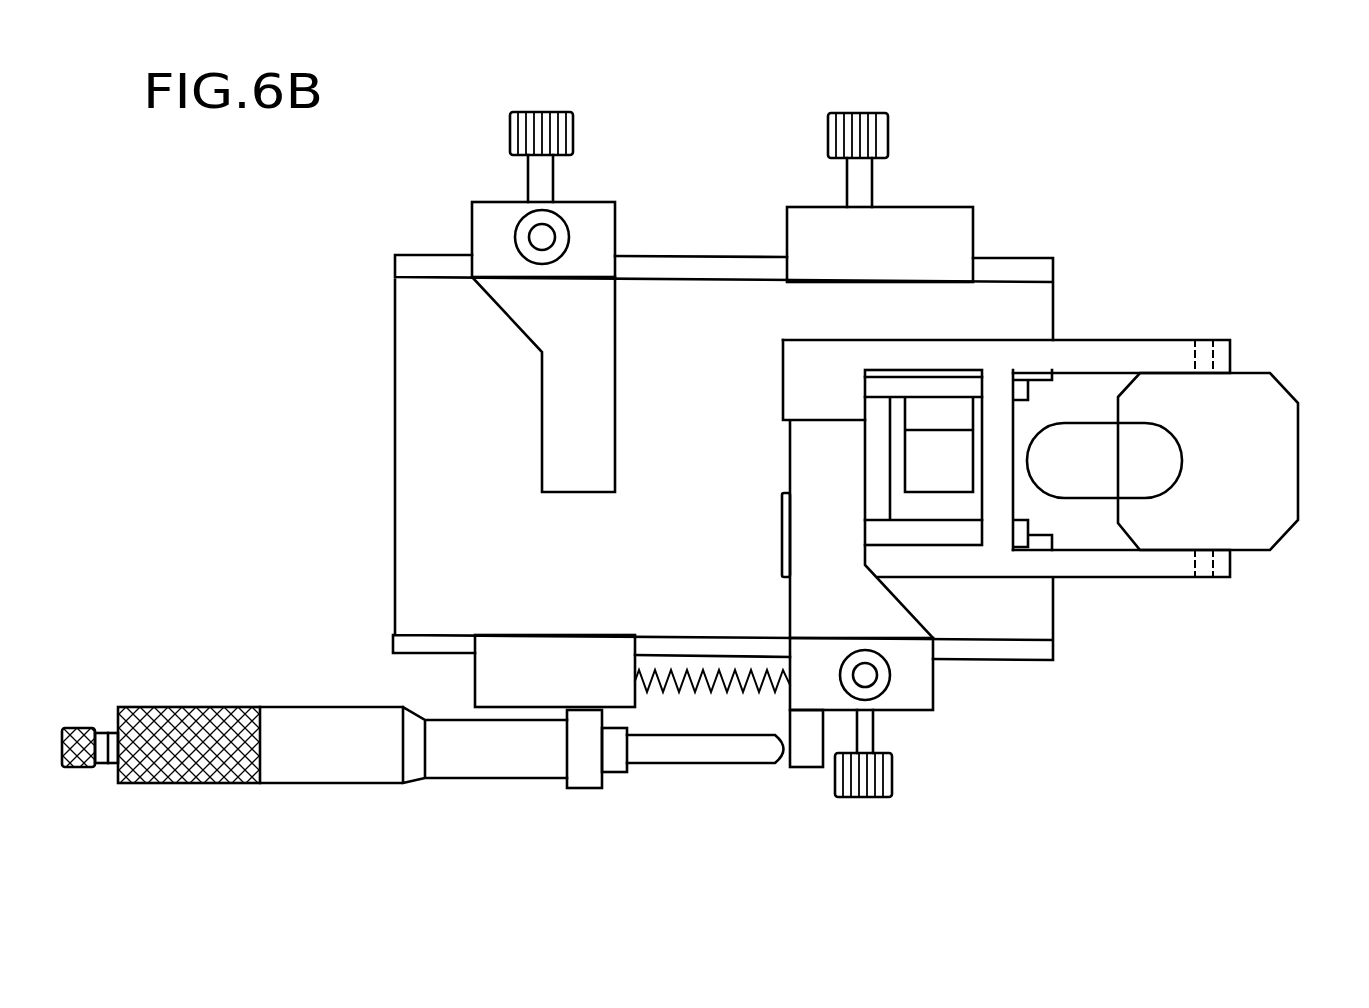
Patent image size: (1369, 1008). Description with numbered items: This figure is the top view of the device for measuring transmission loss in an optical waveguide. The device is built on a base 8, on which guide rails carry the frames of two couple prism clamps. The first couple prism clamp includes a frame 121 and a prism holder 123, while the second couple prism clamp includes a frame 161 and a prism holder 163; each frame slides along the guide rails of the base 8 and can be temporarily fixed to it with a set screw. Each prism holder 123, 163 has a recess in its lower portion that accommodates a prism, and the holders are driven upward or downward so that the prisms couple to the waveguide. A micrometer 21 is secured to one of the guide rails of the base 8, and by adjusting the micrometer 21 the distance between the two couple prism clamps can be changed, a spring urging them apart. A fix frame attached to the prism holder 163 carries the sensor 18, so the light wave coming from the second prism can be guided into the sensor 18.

The base 8 is at (403, 437).
The frame 121 is at (607, 228).
The prism holder 123 is at (602, 435).
The prism holder 163 is at (797, 612).
The frame 161 is at (927, 682).
The sensor 18 is at (1300, 447).
The micrometer 21 is at (483, 770).